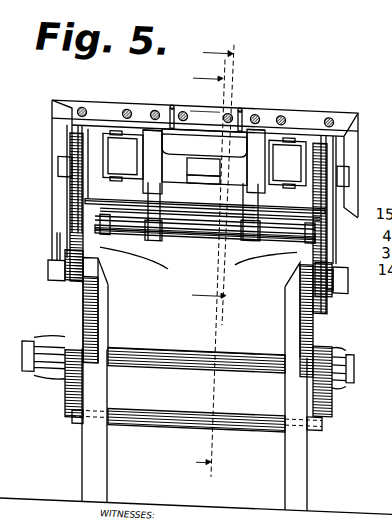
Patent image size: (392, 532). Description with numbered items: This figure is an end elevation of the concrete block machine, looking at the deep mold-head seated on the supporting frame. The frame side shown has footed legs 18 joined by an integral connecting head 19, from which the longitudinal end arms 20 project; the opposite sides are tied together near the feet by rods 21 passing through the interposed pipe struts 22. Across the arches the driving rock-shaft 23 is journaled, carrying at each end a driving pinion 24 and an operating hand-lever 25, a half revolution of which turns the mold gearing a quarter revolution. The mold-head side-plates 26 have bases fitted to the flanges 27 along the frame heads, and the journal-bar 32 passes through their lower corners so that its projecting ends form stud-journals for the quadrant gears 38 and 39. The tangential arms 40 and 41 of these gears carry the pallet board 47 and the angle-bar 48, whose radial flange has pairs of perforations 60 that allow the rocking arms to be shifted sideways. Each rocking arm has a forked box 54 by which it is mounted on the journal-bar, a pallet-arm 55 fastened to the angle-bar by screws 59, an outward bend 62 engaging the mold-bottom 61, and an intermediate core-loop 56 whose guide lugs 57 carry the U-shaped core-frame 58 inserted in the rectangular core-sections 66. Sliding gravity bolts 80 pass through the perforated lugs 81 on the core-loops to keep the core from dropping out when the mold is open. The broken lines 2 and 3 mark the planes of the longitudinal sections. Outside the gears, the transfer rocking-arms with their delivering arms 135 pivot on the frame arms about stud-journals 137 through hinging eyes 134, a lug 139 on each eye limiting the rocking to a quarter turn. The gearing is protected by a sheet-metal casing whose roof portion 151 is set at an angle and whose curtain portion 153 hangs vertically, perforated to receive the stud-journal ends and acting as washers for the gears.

The pallet board 47 is at (348, 103).
The angle-bar 48 is at (302, 112).
The roof portion 151 is at (72, 119).
The curtain portion 153 is at (62, 153).
The delivering arm 135 is at (68, 221).
The arm of quadrant gear 40 is at (82, 186).
The pallet-arm 55 is at (157, 104).
The arm of quadrant gear 41 is at (326, 183).
The core-section 66 is at (204, 159).
The forked box 54 is at (248, 232).
The core-frame 58 is at (204, 149).
The guide lug 57 is at (162, 106).
The core-loop 56 is at (147, 124).
The perforations 60 is at (124, 105).
The sliding gravity bolt 80 is at (173, 102).
The screw 59 is at (172, 98).
The perforated lug 81 is at (205, 117).
The journal-bar 32 is at (203, 229).
The outward bend 62 is at (115, 212).
The mold-bottom 61 is at (282, 212).
The flange 27 is at (218, 270).
The side-plate 26 is at (198, 270).
The connecting head 19 is at (110, 256).
The end arm 20 is at (100, 313).
The footed leg 18 is at (194, 429).
The quadrant gear 38 is at (82, 318).
The quadrant gear 39 is at (333, 316).
The driving pinion 24 is at (66, 386).
The rod 21 is at (70, 417).
The driving rock-shaft 23 is at (186, 355).
The pipe strut 22 is at (150, 421).
The operating hand-lever 25 is at (36, 336).
The stud-journal 137 is at (357, 275).
The hinging eye 134 is at (343, 292).
The lug 139 is at (337, 256).
The broken line 2 is at (228, 296).
The broken line 3 is at (216, 316).